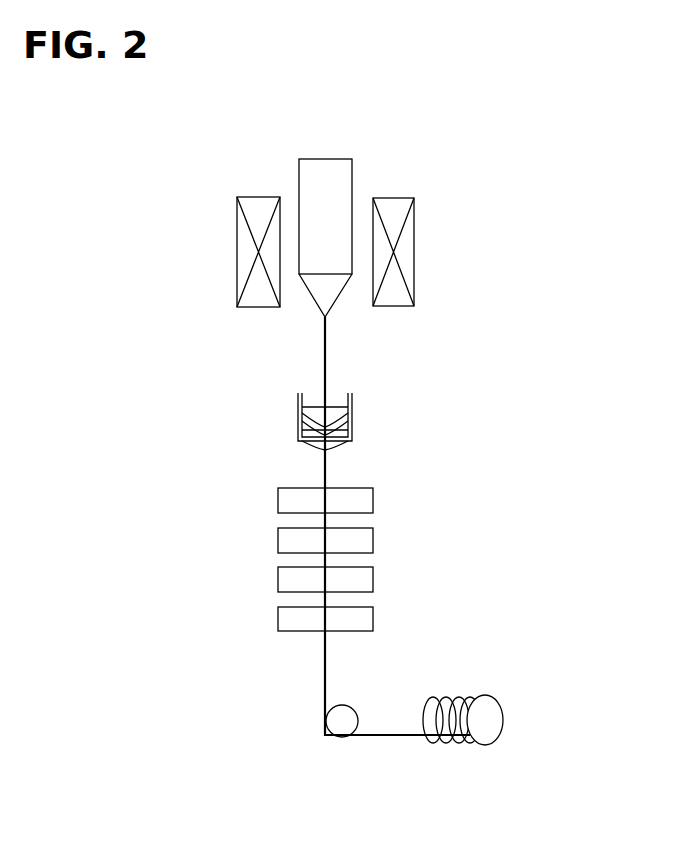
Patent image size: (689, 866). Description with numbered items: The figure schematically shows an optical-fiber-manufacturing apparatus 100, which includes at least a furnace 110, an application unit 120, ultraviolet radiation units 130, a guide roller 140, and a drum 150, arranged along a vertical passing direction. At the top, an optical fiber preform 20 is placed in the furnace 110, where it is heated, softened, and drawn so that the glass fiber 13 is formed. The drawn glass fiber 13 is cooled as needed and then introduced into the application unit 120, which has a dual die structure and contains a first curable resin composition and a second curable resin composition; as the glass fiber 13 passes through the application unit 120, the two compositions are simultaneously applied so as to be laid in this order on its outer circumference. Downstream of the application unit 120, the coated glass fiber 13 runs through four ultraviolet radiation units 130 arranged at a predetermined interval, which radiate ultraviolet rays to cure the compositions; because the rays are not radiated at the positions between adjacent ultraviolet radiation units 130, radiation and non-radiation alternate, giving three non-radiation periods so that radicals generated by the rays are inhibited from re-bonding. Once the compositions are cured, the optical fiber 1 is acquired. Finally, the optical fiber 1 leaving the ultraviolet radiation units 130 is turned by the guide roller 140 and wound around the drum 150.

The optical-fiber-manufacturing apparatus 100 is at (367, 827).
The optical fiber preform 20 is at (341, 175).
The furnace 110 is at (414, 236).
The glass fiber 13 is at (328, 366).
The application unit 120 is at (353, 423).
The ultraviolet radiation units 130 is at (365, 498).
The optical fiber 1 is at (323, 665).
The guide roller 140 is at (345, 720).
The drum 150 is at (483, 717).